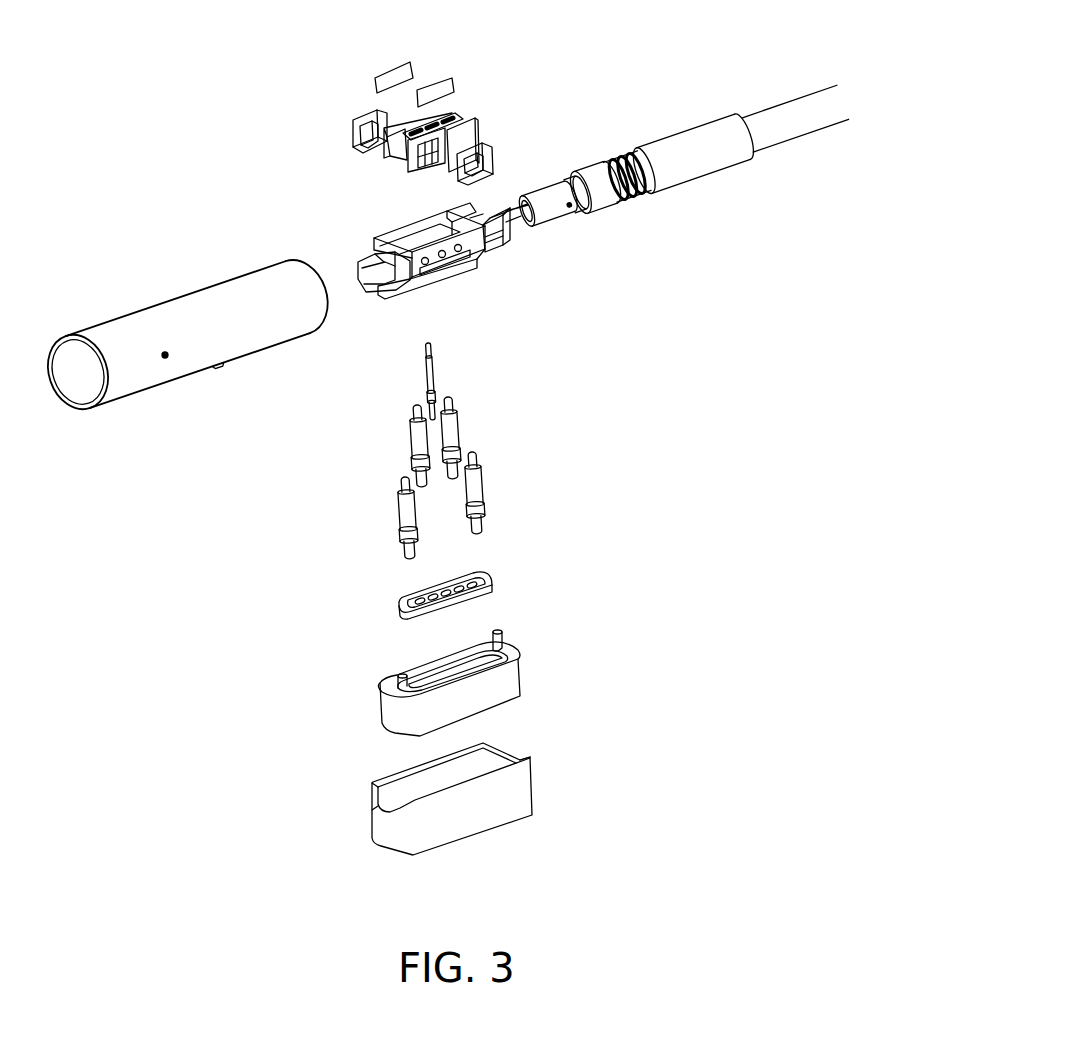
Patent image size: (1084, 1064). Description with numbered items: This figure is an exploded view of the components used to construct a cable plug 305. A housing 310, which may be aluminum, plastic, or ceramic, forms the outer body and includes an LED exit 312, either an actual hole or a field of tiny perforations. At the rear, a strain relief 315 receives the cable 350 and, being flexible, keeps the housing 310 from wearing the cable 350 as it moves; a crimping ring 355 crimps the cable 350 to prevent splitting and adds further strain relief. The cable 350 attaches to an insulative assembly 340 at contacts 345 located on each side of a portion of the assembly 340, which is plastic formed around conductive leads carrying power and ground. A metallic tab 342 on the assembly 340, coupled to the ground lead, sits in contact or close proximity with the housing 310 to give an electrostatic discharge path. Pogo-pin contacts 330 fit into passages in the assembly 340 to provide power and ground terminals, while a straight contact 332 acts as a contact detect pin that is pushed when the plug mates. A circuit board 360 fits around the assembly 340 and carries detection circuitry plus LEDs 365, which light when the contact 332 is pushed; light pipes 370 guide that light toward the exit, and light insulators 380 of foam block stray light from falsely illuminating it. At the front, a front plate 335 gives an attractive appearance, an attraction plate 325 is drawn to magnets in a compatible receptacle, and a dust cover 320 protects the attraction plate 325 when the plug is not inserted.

The cable plug 305 is at (670, 452).
The housing 310 is at (60, 399).
The LED exit 312 is at (167, 359).
The strain relief 315 is at (665, 124).
The dust cover 320 is at (531, 783).
The attraction plate 325 is at (517, 673).
The contacts 330 is at (451, 451).
The contact 332 is at (425, 367).
The front plate 335 is at (510, 570).
The assembly 340 is at (478, 263).
The metallic tab 342 is at (368, 274).
The contacts 345 is at (504, 229).
The cable 350 is at (773, 102).
The crimping ring 355 is at (549, 180).
The circuit board 360 is at (397, 155).
The LEDs 365 is at (432, 172).
The light pipes 370 is at (383, 72).
The light insulators 380 is at (353, 130).